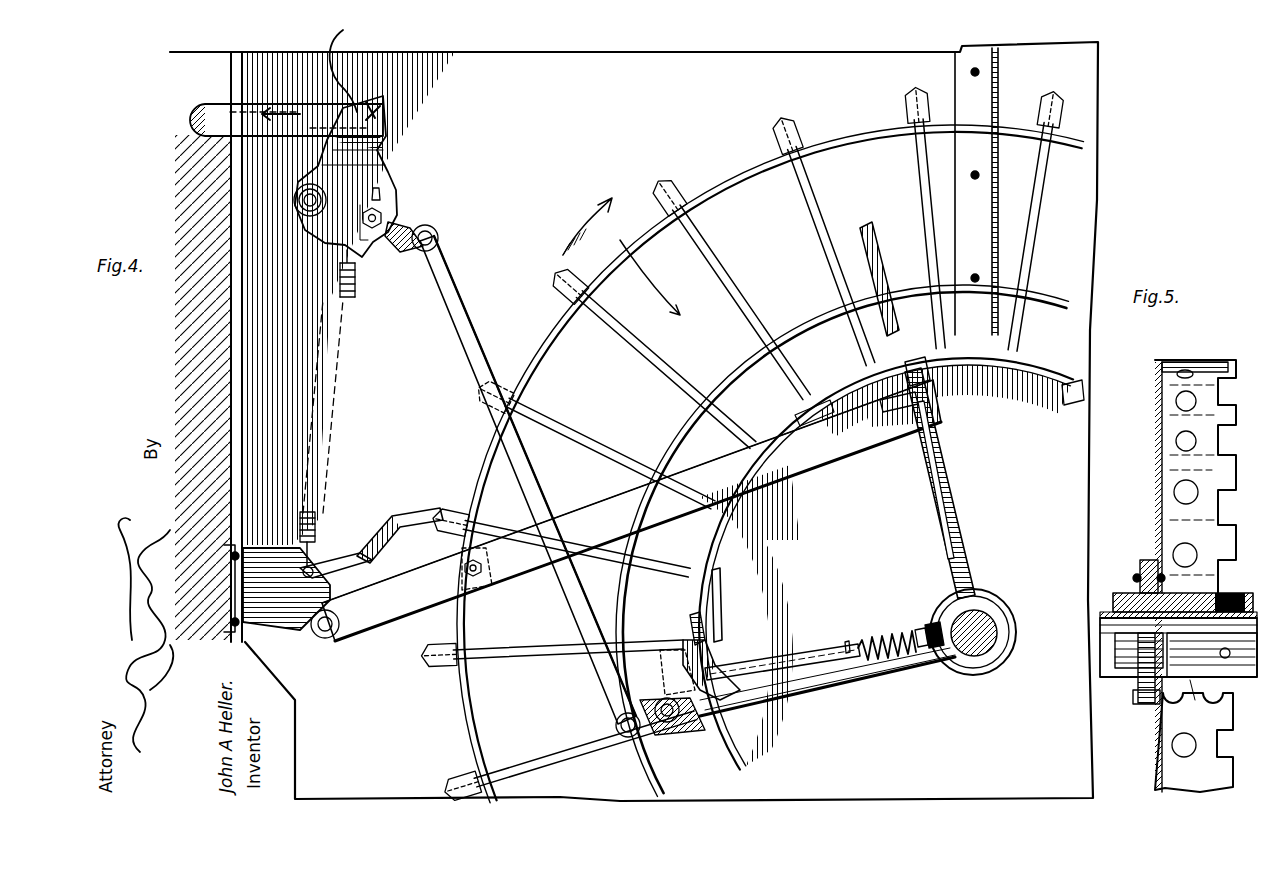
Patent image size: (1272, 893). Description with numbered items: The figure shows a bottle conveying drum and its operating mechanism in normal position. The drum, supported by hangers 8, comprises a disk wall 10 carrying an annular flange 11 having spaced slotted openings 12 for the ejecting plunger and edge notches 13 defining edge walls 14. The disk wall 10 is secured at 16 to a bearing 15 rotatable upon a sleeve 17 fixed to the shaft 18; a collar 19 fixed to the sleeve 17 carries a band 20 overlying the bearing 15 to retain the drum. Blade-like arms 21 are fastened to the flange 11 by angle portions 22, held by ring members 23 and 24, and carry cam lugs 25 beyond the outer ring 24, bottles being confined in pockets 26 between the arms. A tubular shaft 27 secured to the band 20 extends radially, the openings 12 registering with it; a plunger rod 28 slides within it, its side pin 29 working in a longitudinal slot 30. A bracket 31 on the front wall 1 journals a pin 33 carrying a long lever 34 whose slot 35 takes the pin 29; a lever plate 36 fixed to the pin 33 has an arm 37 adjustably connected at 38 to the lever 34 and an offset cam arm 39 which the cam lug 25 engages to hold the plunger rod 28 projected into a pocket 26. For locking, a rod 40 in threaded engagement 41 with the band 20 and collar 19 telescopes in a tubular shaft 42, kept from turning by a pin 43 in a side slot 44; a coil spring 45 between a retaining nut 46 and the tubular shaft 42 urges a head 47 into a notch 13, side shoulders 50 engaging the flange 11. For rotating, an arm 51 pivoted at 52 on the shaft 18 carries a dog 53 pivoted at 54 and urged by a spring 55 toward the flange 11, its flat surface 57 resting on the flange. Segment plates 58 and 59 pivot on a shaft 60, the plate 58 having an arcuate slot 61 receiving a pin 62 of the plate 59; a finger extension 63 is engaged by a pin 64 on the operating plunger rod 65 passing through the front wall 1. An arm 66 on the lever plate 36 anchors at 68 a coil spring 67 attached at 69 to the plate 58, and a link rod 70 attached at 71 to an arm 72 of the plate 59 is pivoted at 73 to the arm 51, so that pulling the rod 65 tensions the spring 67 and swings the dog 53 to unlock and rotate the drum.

In FIG. 4, the front wall 1 is at (232, 345).
In FIG. 4, the hangers 8 is at (980, 115).
In FIG. 4, the disk wall 10 is at (891, 563).
In FIG. 5, the disk wall 10 is at (1156, 468).
In FIG. 4, the annular flange 11 is at (722, 572).
In FIG. 5, the annular flange 11 is at (1200, 362).
In FIG. 5, the slotted openings 12 is at (1188, 490).
In FIG. 4, the notches 13 is at (855, 408).
In FIG. 5, the notches 13 is at (1222, 490).
In FIG. 4, the edge walls 14 is at (855, 395).
In FIG. 5, the edge walls 14 is at (1225, 500).
In FIG. 5, the bearing 15 is at (1125, 670).
In FIG. 5, the axial securing 16 is at (1130, 572).
In FIG. 4, the sleeve 17 is at (998, 655).
In FIG. 5, the sleeve 17 is at (1105, 612).
In FIG. 4, the shaft 18 is at (990, 630).
In FIG. 5, the shaft 18 is at (1110, 650).
In FIG. 5, the collar 19 is at (1240, 594).
In FIG. 4, the band 20 is at (990, 670).
In FIG. 5, the band 20 is at (1215, 695).
In FIG. 4, the blade-like arms 21 is at (745, 328).
In FIG. 4, the angle portions 22 is at (808, 400).
In FIG. 4, the ring member 23 is at (678, 437).
In FIG. 4, the ring member 24 is at (540, 380).
In FIG. 4, the cam lug 25 is at (795, 138).
In FIG. 4, the pocket 26 is at (621, 256).
In FIG. 4, the tubular shaft 27 is at (955, 525).
In FIG. 4, the plunger rod 28 is at (882, 290).
In FIG. 4, the side pin 29 is at (912, 362).
In FIG. 4, the longitudinal slot 30 is at (928, 480).
In FIG. 4, the bracket 31 is at (277, 588).
In FIG. 4, the pin 33 is at (320, 640).
In FIG. 4, the lever 34 is at (580, 515).
In FIG. 4, the slot 35 is at (897, 420).
In FIG. 4, the lever plate 36 is at (336, 571).
In FIG. 4, the arm 37 is at (480, 590).
In FIG. 4, the adjustable connection 38 is at (482, 575).
In FIG. 4, the cam arm 39 is at (392, 516).
In FIG. 4, the rod 40 is at (890, 658).
In FIG. 4, the threaded engagement 41 is at (930, 625).
In FIG. 5, the threaded engagement 41 is at (1240, 668).
In FIG. 4, the tubular shaft 42 is at (795, 690).
In FIG. 4, the pin 43 is at (848, 640).
In FIG. 4, the side slot 44 is at (830, 652).
In FIG. 4, the coil spring 45 is at (868, 662).
In FIG. 4, the retaining nut 46 is at (918, 632).
In FIG. 4, the head 47 is at (744, 652).
In FIG. 4, the side shoulders 50 is at (746, 632).
In FIG. 4, the arm 51 is at (835, 690).
In FIG. 4, the pivot 52 is at (972, 670).
In FIG. 4, the dog 53 is at (690, 628).
In FIG. 4, the pivot 54 is at (680, 722).
In FIG. 4, the spring 55 is at (680, 660).
In FIG. 4, the flat surface 57 is at (729, 620).
In FIG. 4, the segment plate 58 is at (346, 176).
In FIG. 4, the segment plate 59 is at (349, 200).
In FIG. 4, the shaft 60 is at (303, 208).
In FIG. 4, the arcuate slot 61 is at (390, 196).
In FIG. 4, the pin 62 is at (381, 215).
In FIG. 4, the finger extension 63 is at (347, 68).
In FIG. 4, the pin 64 is at (372, 112).
In FIG. 4, the operating plunger rod 65 is at (210, 104).
In FIG. 4, the arm 66 is at (313, 572).
In FIG. 4, the coil spring 67 is at (332, 412).
In FIG. 4, the attachment 68 is at (316, 530).
In FIG. 4, the attachment 69 is at (352, 283).
In FIG. 4, the link rod 70 is at (473, 303).
In FIG. 4, the attachment 71 is at (433, 232).
In FIG. 4, the arm 72 is at (402, 248).
In FIG. 4, the pivotal attachment 73 is at (616, 724).